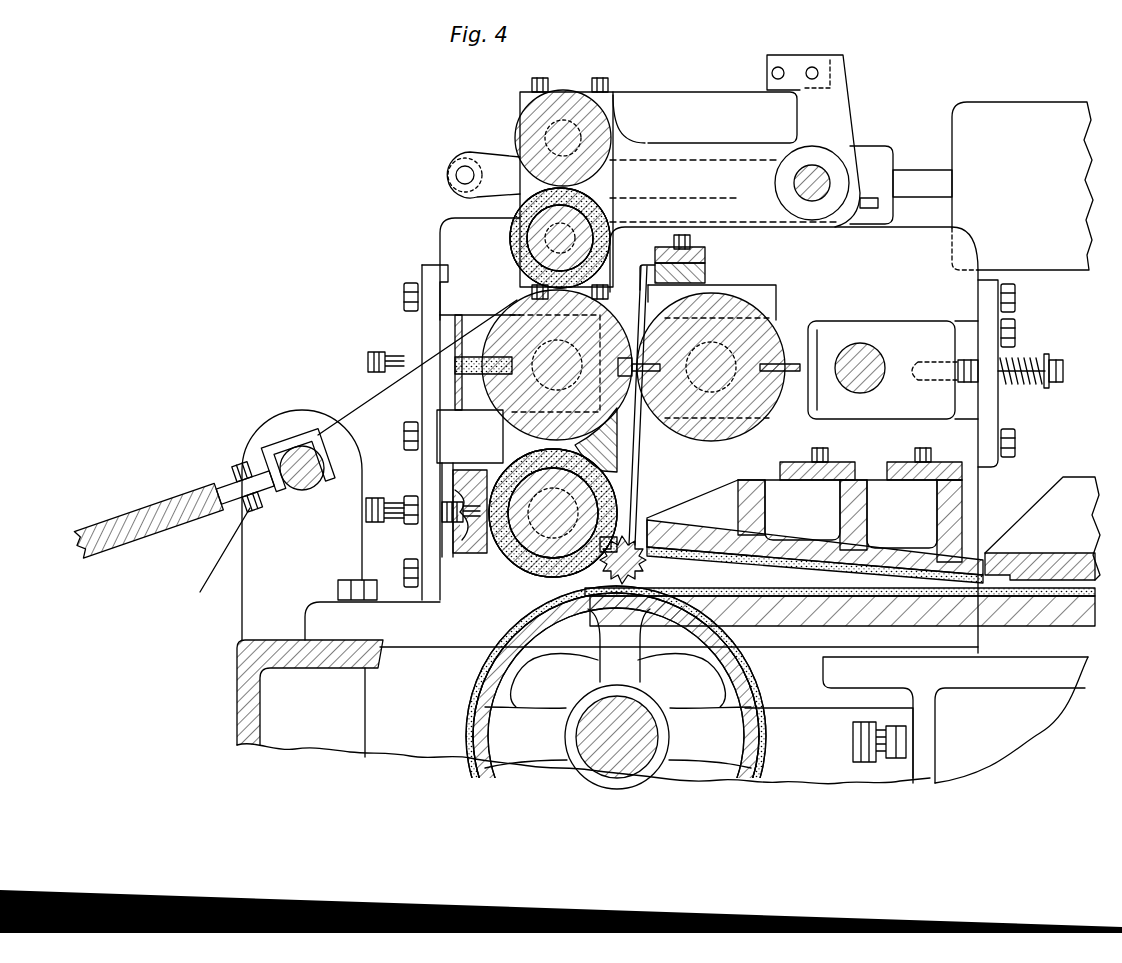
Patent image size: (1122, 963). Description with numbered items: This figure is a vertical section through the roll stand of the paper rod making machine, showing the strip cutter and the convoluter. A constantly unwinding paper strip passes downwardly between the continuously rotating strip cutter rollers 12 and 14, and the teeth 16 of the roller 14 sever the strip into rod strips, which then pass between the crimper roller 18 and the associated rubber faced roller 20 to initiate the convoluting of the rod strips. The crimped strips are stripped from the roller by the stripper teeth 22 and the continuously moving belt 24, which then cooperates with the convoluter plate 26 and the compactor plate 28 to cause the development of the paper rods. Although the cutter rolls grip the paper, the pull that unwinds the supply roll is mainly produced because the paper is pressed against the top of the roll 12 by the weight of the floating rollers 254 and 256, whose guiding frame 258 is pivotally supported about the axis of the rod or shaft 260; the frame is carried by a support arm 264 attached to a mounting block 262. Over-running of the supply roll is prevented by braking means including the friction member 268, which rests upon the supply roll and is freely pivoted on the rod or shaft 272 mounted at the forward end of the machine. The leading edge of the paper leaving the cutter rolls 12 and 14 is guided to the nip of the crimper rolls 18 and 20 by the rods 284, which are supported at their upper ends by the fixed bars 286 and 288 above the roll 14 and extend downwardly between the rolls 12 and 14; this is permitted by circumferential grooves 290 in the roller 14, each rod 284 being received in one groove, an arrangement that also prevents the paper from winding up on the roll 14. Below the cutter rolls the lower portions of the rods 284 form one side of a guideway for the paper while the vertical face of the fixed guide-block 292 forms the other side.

The strip cutter roller 12 is at (514, 322).
The strip cutter roller 14 is at (765, 322).
The teeth 16 is at (792, 380).
The crimper roller 18 is at (650, 540).
The rubber faced roller 20 is at (525, 565).
The stripper teeth 22 is at (648, 571).
The belt 24 is at (800, 592).
The convoluter plate 26 is at (788, 542).
The compactor plate 28 is at (1055, 553).
The floating roller 254 is at (525, 128).
The floating roller 256 is at (508, 238).
The guiding frame 258 is at (668, 143).
The rod or shaft 260 is at (822, 178).
The mounting block 262 is at (1013, 102).
The support arm 264 is at (917, 170).
The friction member 268 is at (148, 500).
The rod or shaft 272 is at (297, 455).
The rods 284 is at (636, 437).
The fixed bar 286 is at (706, 258).
The fixed bar 288 is at (708, 270).
The circumferential grooves 290 is at (775, 335).
The fixed guide-block 292 is at (577, 450).